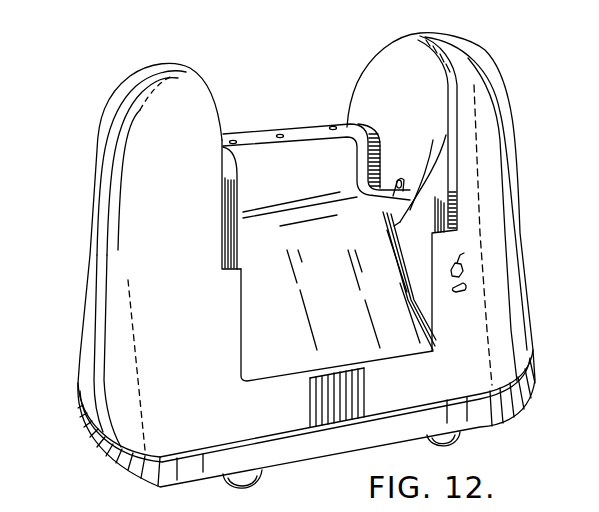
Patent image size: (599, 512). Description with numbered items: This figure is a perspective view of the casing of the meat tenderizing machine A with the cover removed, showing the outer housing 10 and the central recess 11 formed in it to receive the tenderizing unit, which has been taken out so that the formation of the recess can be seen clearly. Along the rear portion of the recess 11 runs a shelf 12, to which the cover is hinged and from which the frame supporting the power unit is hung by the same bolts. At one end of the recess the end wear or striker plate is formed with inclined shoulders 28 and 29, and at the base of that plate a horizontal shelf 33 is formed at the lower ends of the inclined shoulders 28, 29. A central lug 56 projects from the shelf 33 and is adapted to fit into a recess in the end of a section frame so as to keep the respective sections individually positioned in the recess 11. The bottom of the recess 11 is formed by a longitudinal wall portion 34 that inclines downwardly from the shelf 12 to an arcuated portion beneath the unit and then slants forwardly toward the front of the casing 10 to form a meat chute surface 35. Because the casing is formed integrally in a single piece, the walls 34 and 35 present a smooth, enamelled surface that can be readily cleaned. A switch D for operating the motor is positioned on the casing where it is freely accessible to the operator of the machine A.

The outer housing 10 is at (500, 202).
The recess 11 is at (347, 108).
The shelf 12 is at (261, 146).
The inclined shoulder 28 is at (415, 172).
The inclined shoulder 29 is at (376, 148).
The horizontal shelf 33 is at (400, 213).
The longitudinal wall portion 34 is at (306, 163).
The meat chute surface 35 is at (252, 328).
The central lug 56 is at (387, 183).
The meat tenderizing machine A is at (98, 344).
The switch D is at (463, 263).